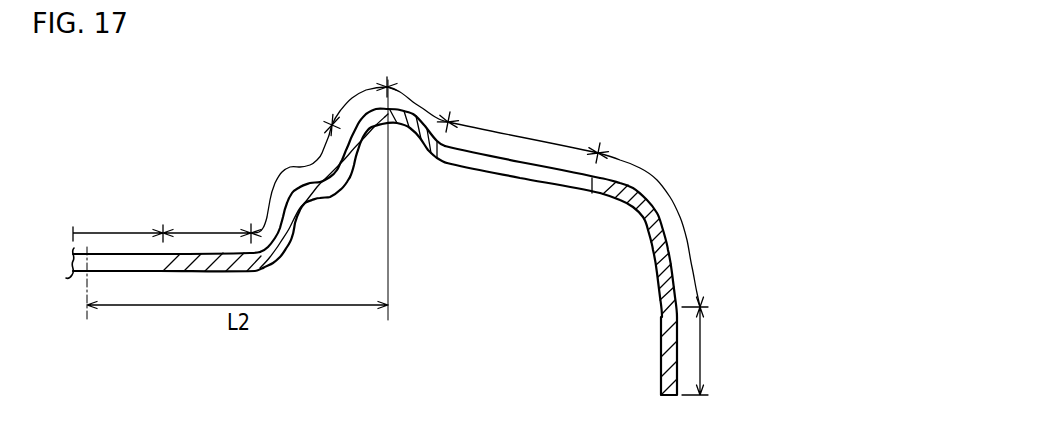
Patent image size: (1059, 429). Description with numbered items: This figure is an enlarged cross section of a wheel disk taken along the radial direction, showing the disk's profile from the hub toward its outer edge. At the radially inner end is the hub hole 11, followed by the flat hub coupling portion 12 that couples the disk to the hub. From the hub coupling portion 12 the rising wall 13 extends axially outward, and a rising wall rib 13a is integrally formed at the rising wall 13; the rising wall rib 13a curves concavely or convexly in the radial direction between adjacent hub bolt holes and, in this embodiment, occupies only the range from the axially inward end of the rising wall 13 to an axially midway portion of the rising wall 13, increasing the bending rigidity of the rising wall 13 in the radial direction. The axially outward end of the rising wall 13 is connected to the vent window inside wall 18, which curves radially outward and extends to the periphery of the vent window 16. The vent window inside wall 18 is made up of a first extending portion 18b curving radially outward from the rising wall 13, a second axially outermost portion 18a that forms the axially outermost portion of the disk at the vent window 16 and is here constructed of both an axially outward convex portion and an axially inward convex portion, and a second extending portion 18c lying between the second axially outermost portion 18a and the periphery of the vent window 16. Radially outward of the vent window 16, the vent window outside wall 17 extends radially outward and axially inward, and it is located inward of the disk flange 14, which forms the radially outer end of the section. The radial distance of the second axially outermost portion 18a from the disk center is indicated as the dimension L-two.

The hub hole 11 is at (110, 232).
The hub coupling portion 12 is at (210, 232).
The rising wall 13 is at (290, 167).
The rising wall rib 13a is at (307, 200).
The disk flange 14 is at (702, 350).
The vent window 16 is at (522, 138).
The vent window outside wall 17 is at (687, 218).
The vent window inside wall 18 is at (396, 133).
The second axially outermost portion 18a is at (398, 125).
The first extending portion 18b is at (362, 93).
The second extending portion 18c is at (418, 100).